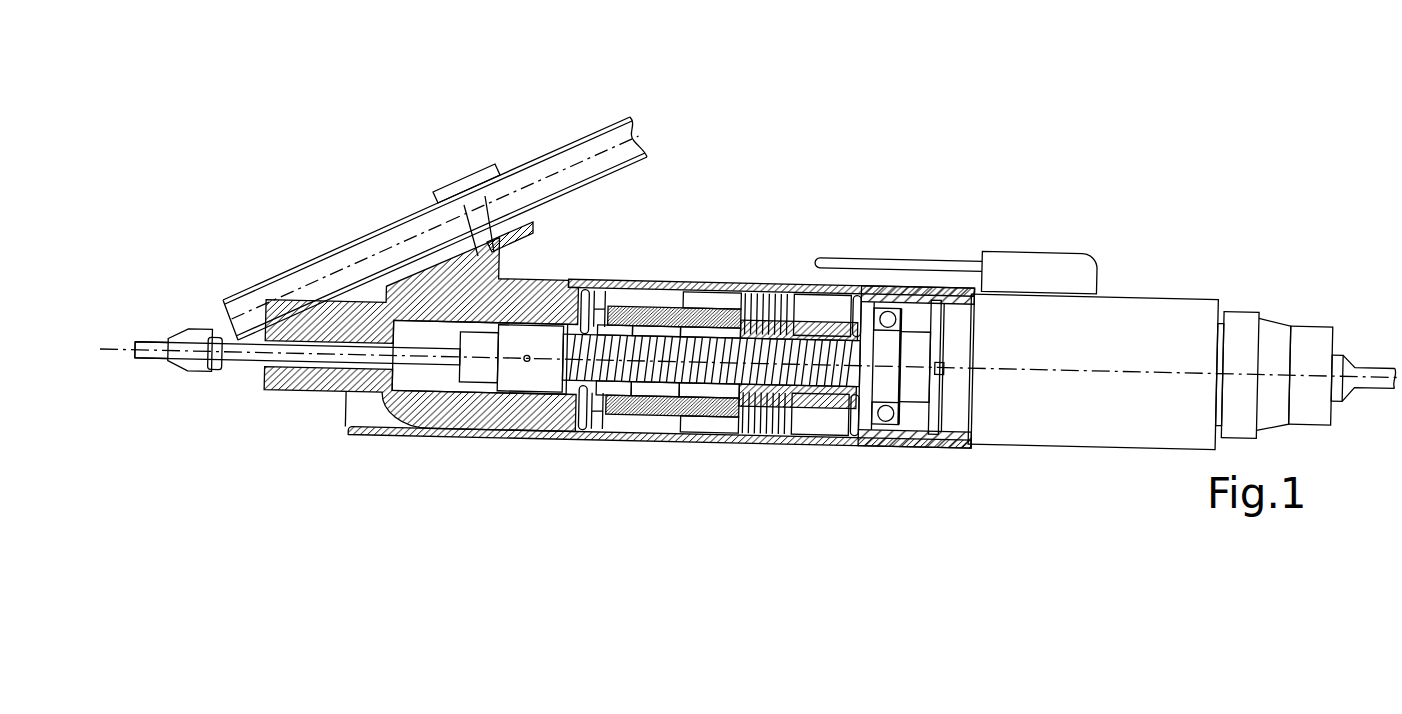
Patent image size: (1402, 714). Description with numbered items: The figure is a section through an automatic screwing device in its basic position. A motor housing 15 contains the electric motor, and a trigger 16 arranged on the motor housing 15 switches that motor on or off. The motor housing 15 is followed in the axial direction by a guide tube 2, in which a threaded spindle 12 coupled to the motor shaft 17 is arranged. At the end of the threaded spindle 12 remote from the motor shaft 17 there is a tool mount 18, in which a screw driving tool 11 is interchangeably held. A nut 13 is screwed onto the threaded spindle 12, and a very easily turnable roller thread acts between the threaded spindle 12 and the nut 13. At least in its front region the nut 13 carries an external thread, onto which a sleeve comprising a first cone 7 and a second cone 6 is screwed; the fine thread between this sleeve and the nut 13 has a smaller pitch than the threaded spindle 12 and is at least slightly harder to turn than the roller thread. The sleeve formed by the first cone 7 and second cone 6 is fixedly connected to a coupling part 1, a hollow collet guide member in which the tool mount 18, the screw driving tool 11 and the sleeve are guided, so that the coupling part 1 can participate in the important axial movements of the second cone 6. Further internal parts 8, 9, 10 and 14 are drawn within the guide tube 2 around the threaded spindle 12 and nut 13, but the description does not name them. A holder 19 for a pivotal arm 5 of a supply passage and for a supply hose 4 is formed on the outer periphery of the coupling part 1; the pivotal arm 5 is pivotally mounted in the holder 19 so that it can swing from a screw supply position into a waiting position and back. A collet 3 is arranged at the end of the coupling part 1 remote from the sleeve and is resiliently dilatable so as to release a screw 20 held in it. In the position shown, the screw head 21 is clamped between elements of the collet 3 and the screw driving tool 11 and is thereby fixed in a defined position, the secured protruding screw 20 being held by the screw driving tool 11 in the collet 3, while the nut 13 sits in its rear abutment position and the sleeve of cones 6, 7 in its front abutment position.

The coupling part 1 is at (485, 412).
The guide tube 2 is at (372, 433).
The collet 3 is at (195, 376).
The supply hose 4 is at (561, 175).
The pivotal arm 5 is at (362, 268).
The second cone 6 is at (607, 432).
The first cone 7 is at (692, 299).
The spring seat 8 is at (715, 301).
The nut 9 is at (731, 410).
The sleeve block 10 is at (777, 441).
The screw driving tool 11 is at (333, 357).
The threaded spindle 12 is at (659, 372).
The nut 13 is at (815, 322).
The bearing housing 14 is at (890, 386).
The motor housing 15 is at (1083, 409).
The trigger 16 is at (1040, 264).
The motor shaft 17 is at (943, 387).
The tool mount 18 is at (527, 362).
The holder 19 is at (469, 190).
The screw 20 is at (150, 355).
The screw head 21 is at (215, 338).